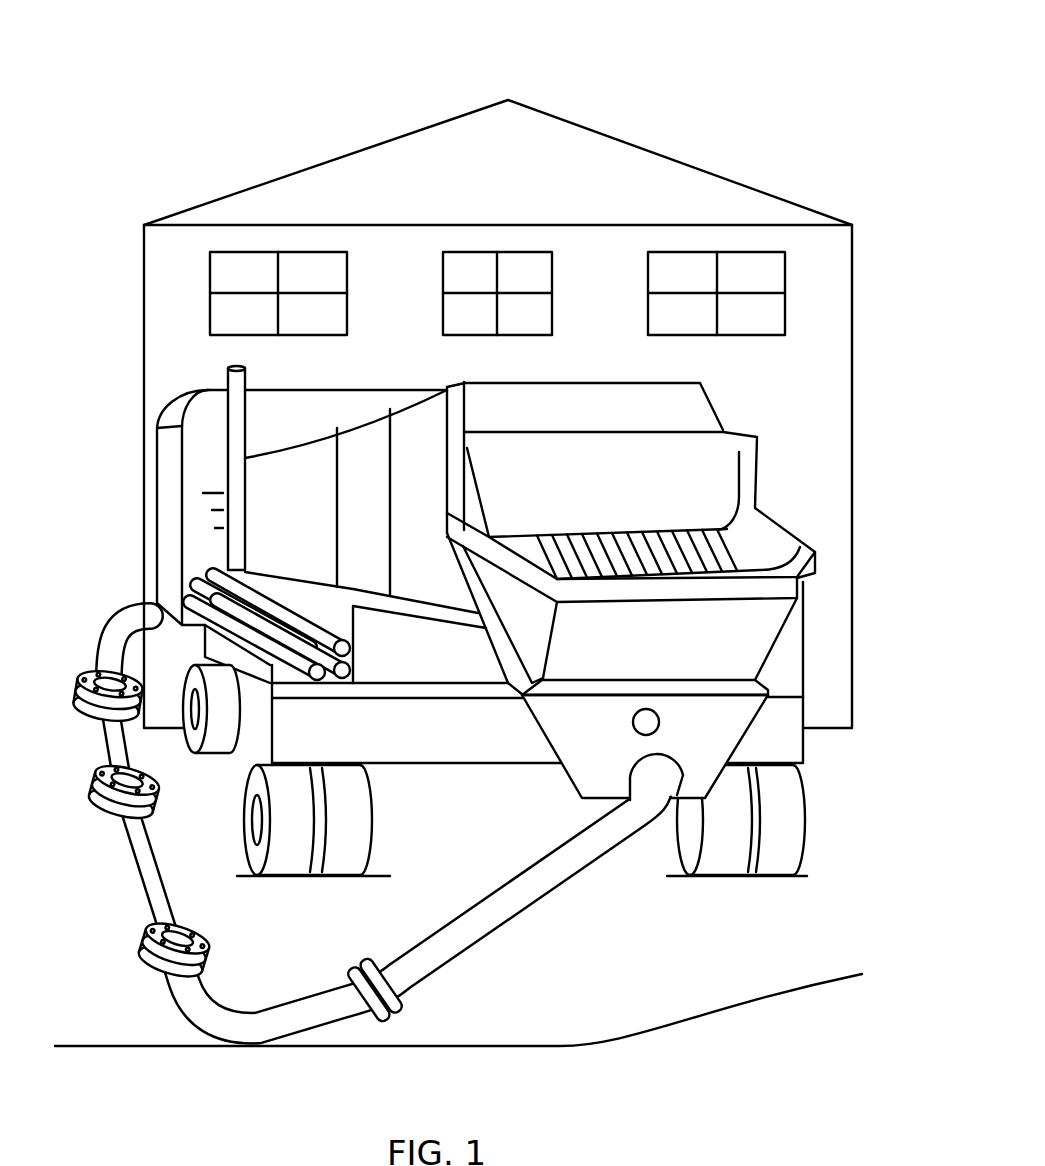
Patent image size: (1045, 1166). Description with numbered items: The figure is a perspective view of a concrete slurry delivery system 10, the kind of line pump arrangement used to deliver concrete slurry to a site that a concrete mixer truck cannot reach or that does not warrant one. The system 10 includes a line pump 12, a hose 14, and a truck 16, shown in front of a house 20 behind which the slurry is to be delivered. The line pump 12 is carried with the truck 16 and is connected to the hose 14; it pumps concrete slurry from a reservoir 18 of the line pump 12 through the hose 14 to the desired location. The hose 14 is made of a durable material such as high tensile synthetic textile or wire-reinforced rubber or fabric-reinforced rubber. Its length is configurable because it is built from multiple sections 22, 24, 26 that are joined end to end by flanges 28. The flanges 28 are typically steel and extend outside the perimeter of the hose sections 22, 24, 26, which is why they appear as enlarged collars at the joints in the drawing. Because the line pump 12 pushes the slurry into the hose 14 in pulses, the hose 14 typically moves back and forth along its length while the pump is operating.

The concrete slurry delivery system 10 is at (778, 66).
The line pump 12 is at (698, 452).
The hose 14 is at (263, 1010).
The truck 16 is at (170, 405).
The reservoir 18 is at (754, 536).
The house 20 is at (142, 267).
The hose section 22 is at (131, 863).
The hose section 24 is at (103, 748).
The hose section 26 is at (98, 633).
The flange 28 is at (97, 807).